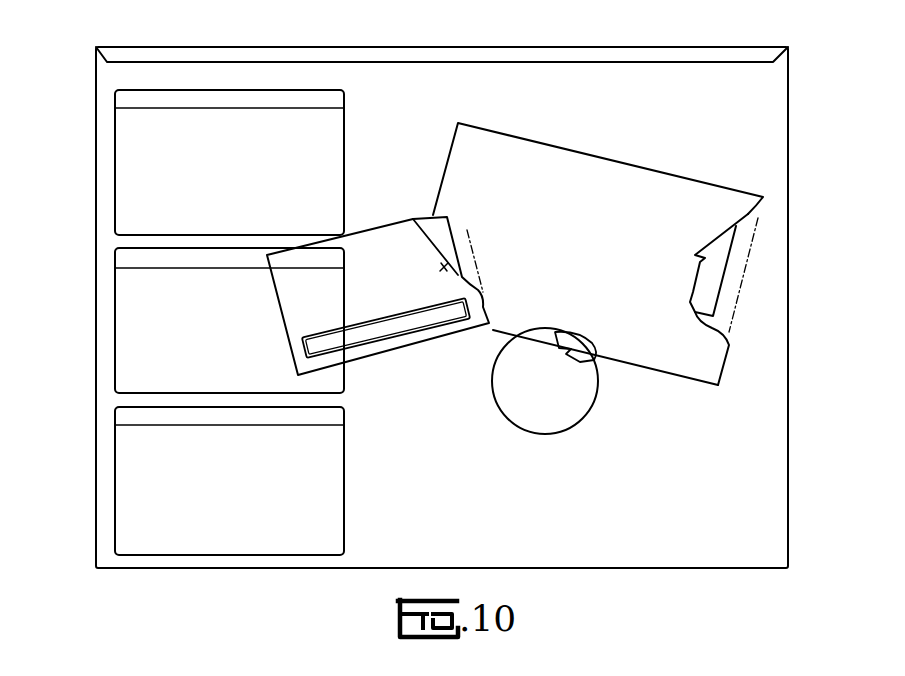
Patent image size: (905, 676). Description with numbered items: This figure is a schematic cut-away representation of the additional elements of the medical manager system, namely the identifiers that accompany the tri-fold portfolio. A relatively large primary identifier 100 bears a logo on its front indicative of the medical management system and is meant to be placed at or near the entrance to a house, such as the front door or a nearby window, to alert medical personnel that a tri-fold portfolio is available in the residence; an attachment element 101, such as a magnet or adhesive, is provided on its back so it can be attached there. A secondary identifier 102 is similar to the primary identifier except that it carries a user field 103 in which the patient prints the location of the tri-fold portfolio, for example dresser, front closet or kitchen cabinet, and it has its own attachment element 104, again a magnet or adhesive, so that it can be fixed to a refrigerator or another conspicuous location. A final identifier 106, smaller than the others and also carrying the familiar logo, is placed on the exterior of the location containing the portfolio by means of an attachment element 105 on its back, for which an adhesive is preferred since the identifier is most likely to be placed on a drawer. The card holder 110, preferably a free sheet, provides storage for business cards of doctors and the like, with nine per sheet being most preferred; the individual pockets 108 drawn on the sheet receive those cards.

The primary identifier 100 is at (642, 167).
The attachment element 101 is at (720, 283).
The secondary identifier 102 is at (367, 358).
The user field 103 is at (403, 327).
The attachment element 104 is at (432, 225).
The attachment element 105 is at (577, 343).
The final identifier 106 is at (548, 425).
The pocket / compartment 108 is at (177, 207).
The card holder 110 is at (83, 81).